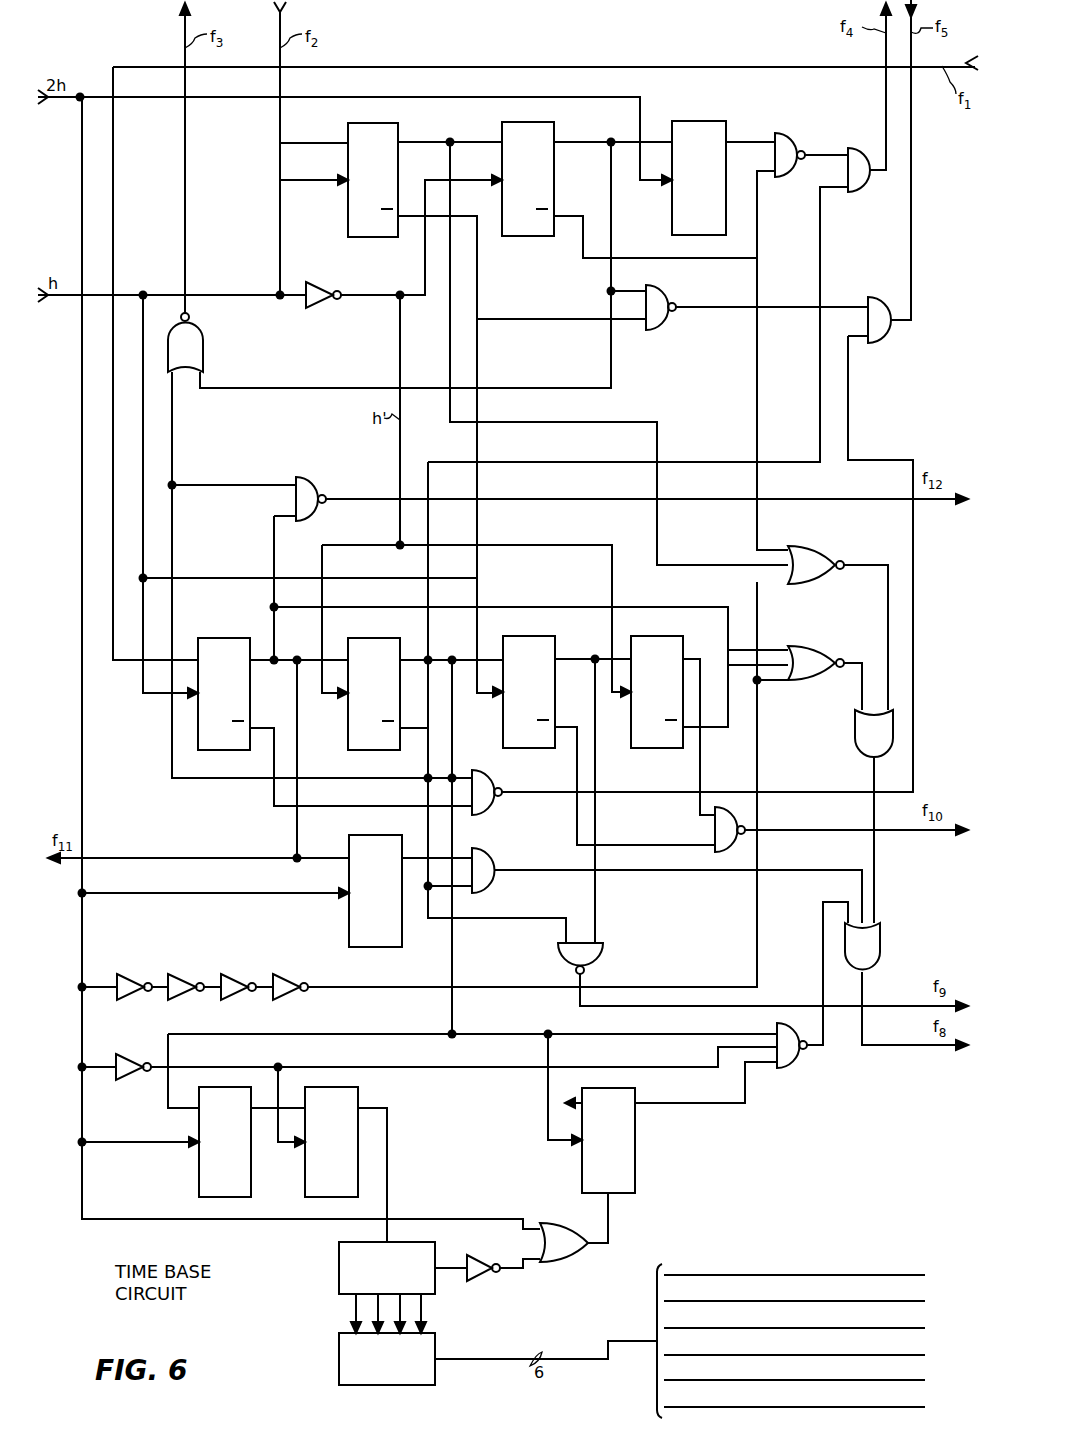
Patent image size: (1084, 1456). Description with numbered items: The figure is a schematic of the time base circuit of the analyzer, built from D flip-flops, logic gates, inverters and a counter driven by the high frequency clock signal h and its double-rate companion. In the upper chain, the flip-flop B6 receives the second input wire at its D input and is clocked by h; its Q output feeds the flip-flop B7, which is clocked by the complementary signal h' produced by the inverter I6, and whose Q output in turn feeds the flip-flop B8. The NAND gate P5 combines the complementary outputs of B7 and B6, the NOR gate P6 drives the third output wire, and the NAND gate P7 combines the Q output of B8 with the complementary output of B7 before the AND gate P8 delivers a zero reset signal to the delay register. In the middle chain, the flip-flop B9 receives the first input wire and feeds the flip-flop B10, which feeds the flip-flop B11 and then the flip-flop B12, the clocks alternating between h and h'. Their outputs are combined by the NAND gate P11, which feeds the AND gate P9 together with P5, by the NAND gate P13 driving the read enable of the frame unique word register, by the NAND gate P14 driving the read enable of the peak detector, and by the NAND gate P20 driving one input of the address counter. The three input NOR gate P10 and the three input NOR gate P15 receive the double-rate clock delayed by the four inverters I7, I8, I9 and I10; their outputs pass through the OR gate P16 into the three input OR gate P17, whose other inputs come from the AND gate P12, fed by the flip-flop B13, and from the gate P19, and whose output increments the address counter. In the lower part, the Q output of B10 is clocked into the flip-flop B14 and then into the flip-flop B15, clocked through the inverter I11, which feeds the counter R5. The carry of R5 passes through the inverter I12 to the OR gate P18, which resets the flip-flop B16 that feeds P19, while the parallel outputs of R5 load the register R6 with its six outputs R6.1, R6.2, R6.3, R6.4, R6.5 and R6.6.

The flip-flop B6 is at (351, 238).
The flip-flop B7 is at (515, 237).
The flip-flop B8 is at (683, 120).
The flip-flop B9 is at (207, 637).
The flip-flop B10 is at (357, 637).
The flip-flop B11 is at (512, 635).
The flip-flop B12 is at (641, 635).
The flip-flop B13 is at (382, 948).
The flip-flop B14 is at (199, 1178).
The flip-flop B15 is at (358, 1096).
The flip-flop B16 is at (635, 1170).
The NAND gate P5 is at (664, 330).
The NOR gate P6 is at (203, 344).
The NAND gate P7 is at (788, 133).
The AND gate P8 is at (860, 192).
The AND gate P9 is at (888, 340).
The three input NOR gate P10 is at (806, 646).
The NAND gate P11 is at (494, 782).
The AND gate P12 is at (494, 860).
The NAND gate P13 is at (603, 948).
The NAND gate P14 is at (714, 826).
The three input NOR gate P15 is at (806, 546).
The OR gate P16 is at (856, 738).
The three input OR gate P17 is at (880, 942).
The OR gate P18 is at (560, 1262).
The NAND gate P19 is at (795, 1066).
The NAND gate P20 is at (318, 478).
The inverter I6 is at (316, 302).
The inverter I7 is at (118, 972).
The inverter I8 is at (170, 972).
The inverter I9 is at (223, 972).
The inverter I10 is at (278, 972).
The inverter I11 is at (120, 1080).
The inverter I12 is at (474, 1281).
The counter R5 is at (339, 1266).
The register R6 is at (339, 1358).
The register output R6.1 is at (794, 1265).
The register output R6.2 is at (794, 1291).
The register output R6.3 is at (794, 1318).
The register output R6.4 is at (794, 1345).
The register output R6.5 is at (794, 1370).
The register output R6.6 is at (794, 1397).